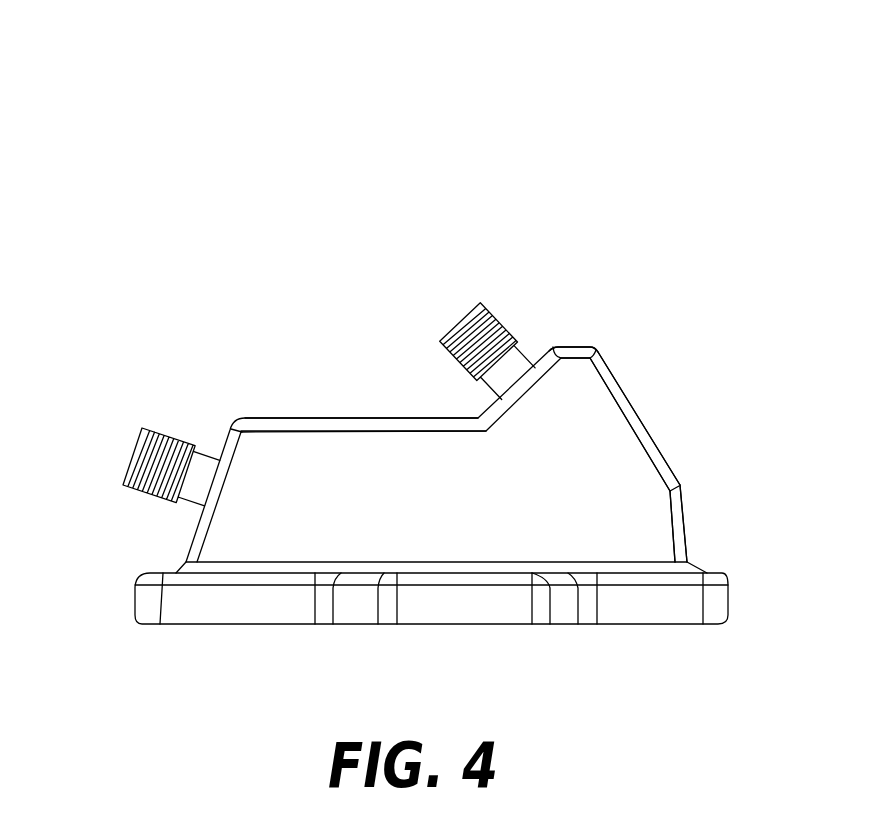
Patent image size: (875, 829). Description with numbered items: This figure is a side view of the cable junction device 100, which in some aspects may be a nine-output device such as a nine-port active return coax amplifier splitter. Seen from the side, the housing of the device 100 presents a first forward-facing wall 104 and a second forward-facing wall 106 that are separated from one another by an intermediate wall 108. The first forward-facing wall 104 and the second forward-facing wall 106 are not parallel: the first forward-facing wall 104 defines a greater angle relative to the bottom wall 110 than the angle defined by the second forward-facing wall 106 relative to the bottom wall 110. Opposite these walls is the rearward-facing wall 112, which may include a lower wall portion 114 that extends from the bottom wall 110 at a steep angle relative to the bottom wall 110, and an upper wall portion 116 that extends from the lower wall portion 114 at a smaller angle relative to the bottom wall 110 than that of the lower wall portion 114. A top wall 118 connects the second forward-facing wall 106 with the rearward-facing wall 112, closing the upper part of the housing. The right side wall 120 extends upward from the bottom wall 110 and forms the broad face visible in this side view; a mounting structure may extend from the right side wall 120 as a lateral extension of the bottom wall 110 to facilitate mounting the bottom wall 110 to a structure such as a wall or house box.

The cable junction device 100 is at (366, 205).
The first forward-facing wall 104 is at (187, 542).
The second forward-facing wall 106 is at (545, 352).
The intermediate wall 108 is at (317, 423).
The bottom wall 110 is at (255, 622).
The rearward-facing wall 112 is at (722, 443).
The lower wall portion 114 is at (684, 530).
The upper wall portion 116 is at (642, 420).
The top wall 118 is at (572, 348).
The right side wall 120 is at (447, 510).